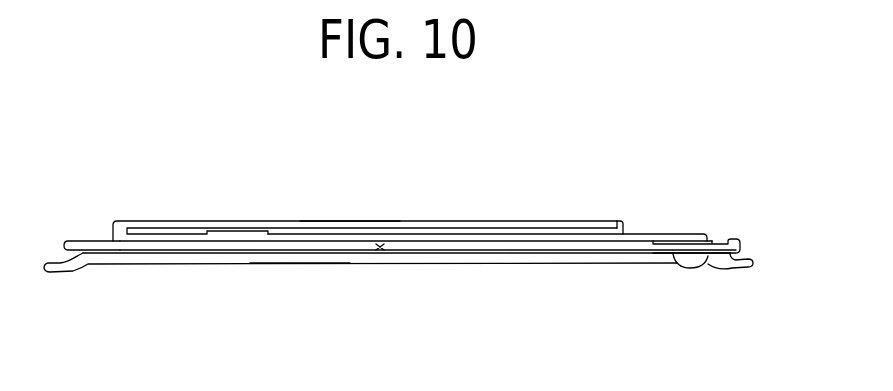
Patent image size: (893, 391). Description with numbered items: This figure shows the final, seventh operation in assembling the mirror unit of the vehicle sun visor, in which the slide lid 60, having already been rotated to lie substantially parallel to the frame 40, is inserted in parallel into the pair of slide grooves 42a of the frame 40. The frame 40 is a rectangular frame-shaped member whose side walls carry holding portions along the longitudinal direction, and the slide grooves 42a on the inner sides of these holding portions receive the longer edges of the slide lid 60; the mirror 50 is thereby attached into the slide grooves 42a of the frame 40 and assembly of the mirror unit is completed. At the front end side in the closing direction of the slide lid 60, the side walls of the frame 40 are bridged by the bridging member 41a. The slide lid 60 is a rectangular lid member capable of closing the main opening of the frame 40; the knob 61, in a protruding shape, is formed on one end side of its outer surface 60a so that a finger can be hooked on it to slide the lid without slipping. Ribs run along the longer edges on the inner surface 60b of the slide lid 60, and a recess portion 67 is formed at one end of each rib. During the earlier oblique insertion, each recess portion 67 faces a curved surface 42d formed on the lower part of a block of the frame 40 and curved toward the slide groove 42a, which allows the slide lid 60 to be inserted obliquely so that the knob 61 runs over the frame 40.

The frame 40 is at (508, 263).
The bridging member 41a is at (620, 222).
The slide groove 42a is at (383, 253).
The curved surface 42d is at (117, 241).
The mirror 50 is at (422, 228).
The slide lid 60 is at (232, 243).
The outer surface of the slide lid 60a is at (298, 253).
The inner surface of the slide lid 60b is at (338, 240).
The knob 61 is at (688, 267).
The recess portion 67 is at (715, 241).